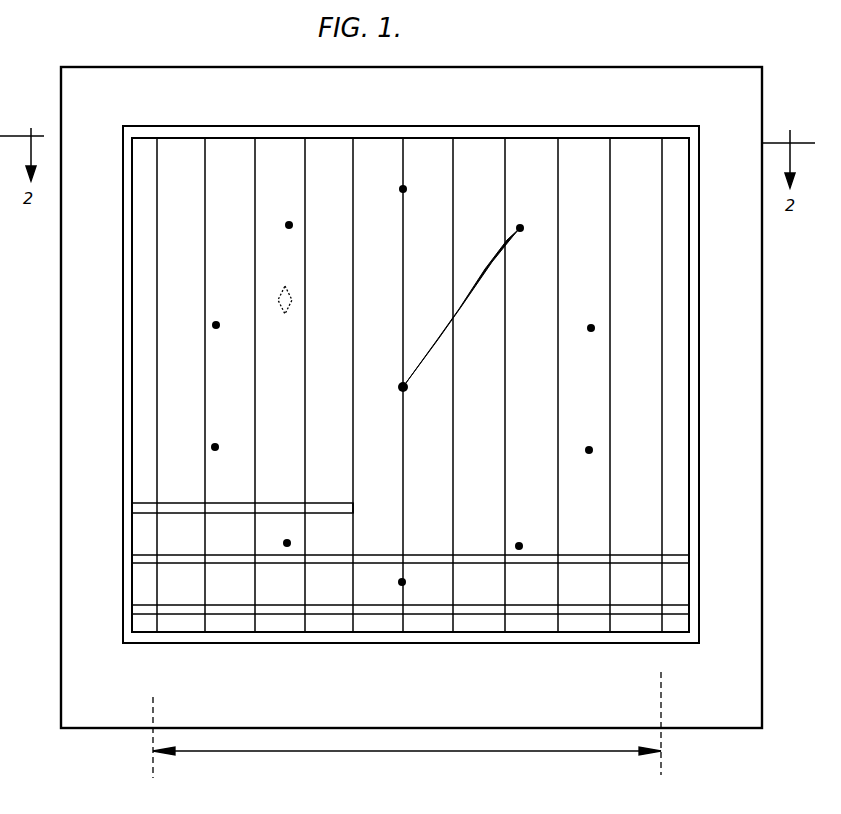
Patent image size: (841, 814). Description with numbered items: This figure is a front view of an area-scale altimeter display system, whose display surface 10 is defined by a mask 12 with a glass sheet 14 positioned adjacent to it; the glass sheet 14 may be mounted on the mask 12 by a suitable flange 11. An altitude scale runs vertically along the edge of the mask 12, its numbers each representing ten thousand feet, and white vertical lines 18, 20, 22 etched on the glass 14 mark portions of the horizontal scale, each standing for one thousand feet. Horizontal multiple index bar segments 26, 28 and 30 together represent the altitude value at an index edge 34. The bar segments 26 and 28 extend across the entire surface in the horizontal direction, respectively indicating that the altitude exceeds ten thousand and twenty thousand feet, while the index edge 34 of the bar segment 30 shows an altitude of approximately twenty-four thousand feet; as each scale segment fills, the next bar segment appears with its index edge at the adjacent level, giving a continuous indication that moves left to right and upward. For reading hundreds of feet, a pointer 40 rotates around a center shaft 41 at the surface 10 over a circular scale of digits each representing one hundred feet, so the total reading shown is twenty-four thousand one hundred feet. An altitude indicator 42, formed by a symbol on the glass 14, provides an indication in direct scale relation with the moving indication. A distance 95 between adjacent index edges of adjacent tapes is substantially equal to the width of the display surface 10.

The display surface 10 is at (378, 466).
The flange 11 is at (210, 127).
The mask 12 is at (148, 89).
The glass sheet 14 is at (636, 418).
The white vertical line 18 is at (152, 632).
The white vertical line 20 is at (205, 633).
The white vertical line 22 is at (305, 633).
The index bar segment 26 is at (160, 607).
The index bar segment 28 is at (167, 555).
The index bar segment 30 is at (170, 506).
The index edge 34 is at (353, 510).
The pointer 40 is at (460, 314).
The center shaft 41 is at (400, 390).
The altitude indicator 42 is at (291, 309).
The distance between adjacent tape edges 95 is at (428, 748).